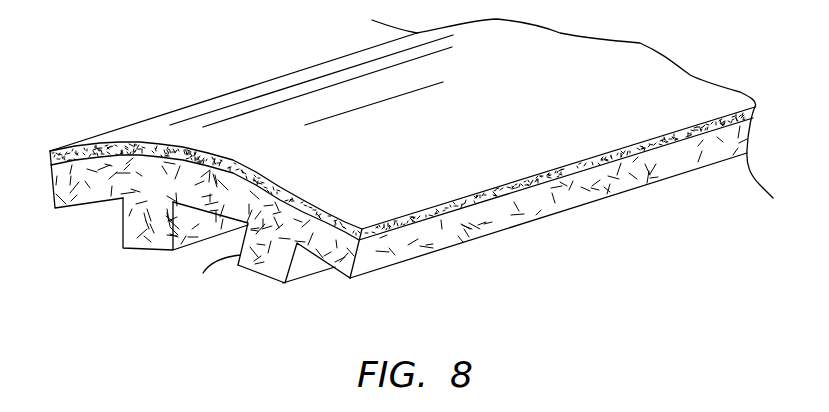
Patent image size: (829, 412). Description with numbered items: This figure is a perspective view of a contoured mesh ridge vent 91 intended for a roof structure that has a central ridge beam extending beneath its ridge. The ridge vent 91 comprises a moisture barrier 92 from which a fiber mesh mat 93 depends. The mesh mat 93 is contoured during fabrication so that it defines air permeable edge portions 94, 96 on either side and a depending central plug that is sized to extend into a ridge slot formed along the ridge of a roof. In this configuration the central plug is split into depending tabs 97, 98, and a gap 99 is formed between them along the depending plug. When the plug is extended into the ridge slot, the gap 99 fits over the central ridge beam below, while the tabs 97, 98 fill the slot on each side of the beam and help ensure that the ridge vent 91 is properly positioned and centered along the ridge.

The ridge vent 91 is at (133, 62).
The moisture barrier 92 is at (505, 126).
The fiber mesh mat 93 is at (100, 277).
The air permeable edge portion 94 is at (344, 276).
The air permeable edge portion 96 is at (82, 205).
The depending tab 97 is at (268, 300).
The depending tab 98 is at (147, 274).
The gap 99 is at (174, 235).